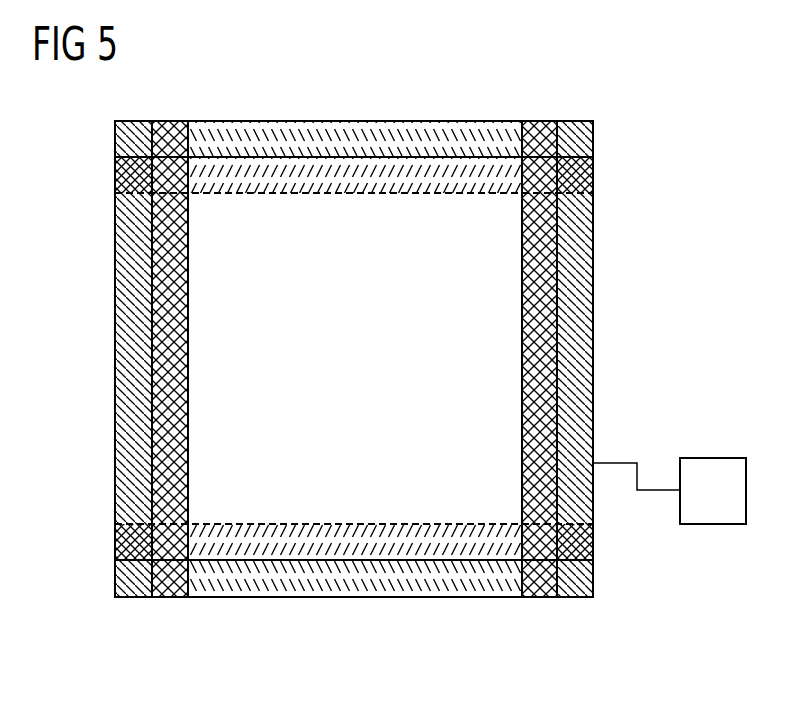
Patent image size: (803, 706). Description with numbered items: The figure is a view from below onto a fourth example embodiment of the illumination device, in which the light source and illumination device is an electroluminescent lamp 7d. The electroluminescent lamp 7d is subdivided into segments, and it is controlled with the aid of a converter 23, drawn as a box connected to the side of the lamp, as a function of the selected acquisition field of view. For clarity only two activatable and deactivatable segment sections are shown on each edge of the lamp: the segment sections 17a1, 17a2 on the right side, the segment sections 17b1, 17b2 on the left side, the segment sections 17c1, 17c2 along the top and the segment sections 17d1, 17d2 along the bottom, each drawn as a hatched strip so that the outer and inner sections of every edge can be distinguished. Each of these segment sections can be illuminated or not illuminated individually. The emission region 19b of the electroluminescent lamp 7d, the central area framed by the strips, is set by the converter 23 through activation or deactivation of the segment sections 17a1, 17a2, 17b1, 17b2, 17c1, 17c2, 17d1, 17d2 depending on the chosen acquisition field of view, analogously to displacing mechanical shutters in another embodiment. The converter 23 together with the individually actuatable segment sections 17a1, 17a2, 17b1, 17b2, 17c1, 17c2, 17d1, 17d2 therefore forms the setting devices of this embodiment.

The electroluminescent lamp 7d is at (717, 190).
The segment section 17a1 is at (625, 377).
The segment section 17a2 is at (530, 336).
The segment section 17b1 is at (90, 379).
The segment section 17b2 is at (212, 364).
The segment section 17c1 is at (393, 100).
The segment section 17c2 is at (349, 216).
The segment section 17d1 is at (343, 620).
The segment section 17d2 is at (370, 537).
The emission region 19b is at (505, 298).
The converter 23 is at (726, 558).